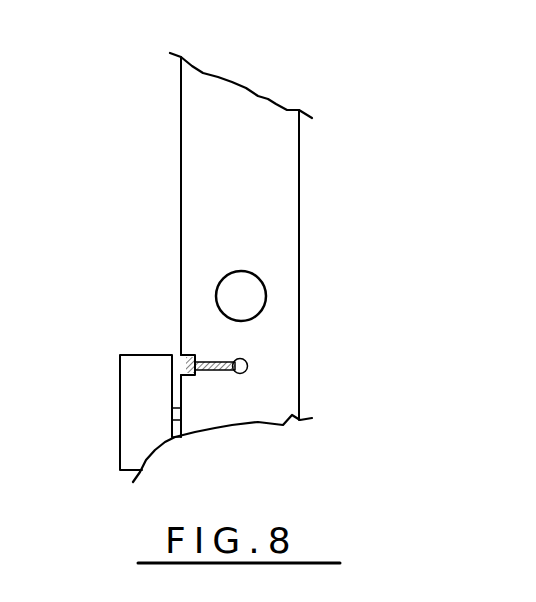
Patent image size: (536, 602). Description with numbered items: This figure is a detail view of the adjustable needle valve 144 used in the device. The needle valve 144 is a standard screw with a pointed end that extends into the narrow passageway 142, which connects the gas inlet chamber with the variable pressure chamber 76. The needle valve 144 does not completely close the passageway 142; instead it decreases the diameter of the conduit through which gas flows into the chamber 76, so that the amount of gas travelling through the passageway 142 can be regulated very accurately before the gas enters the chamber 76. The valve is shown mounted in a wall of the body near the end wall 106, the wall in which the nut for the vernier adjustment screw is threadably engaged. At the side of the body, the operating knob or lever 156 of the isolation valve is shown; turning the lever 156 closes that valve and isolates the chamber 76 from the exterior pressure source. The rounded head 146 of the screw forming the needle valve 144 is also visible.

The end wall 106 is at (300, 161).
The variable pressure chamber 76 is at (246, 294).
The adjustable needle valve 144 is at (213, 355).
The narrow passageway 142 is at (247, 358).
The bolt head 146 is at (250, 371).
The operating knob, or lever 156 is at (131, 408).